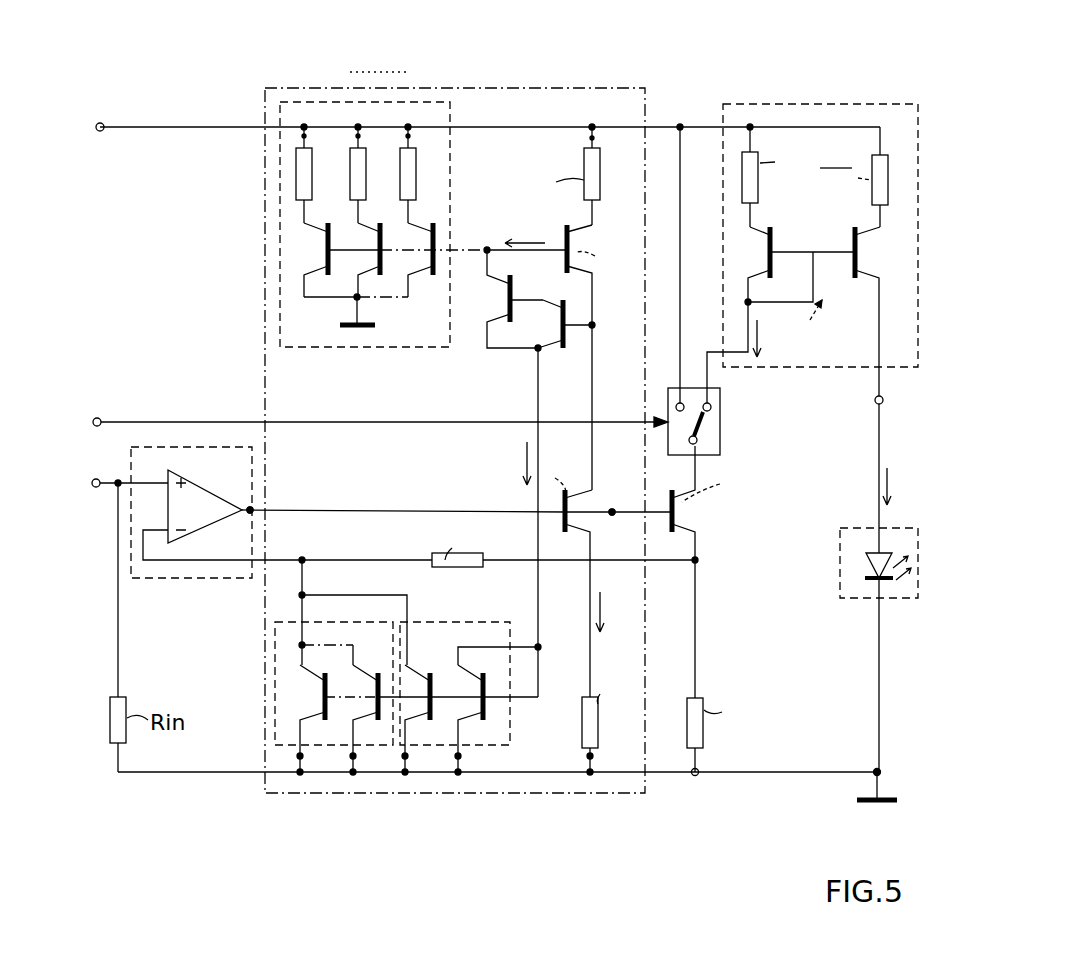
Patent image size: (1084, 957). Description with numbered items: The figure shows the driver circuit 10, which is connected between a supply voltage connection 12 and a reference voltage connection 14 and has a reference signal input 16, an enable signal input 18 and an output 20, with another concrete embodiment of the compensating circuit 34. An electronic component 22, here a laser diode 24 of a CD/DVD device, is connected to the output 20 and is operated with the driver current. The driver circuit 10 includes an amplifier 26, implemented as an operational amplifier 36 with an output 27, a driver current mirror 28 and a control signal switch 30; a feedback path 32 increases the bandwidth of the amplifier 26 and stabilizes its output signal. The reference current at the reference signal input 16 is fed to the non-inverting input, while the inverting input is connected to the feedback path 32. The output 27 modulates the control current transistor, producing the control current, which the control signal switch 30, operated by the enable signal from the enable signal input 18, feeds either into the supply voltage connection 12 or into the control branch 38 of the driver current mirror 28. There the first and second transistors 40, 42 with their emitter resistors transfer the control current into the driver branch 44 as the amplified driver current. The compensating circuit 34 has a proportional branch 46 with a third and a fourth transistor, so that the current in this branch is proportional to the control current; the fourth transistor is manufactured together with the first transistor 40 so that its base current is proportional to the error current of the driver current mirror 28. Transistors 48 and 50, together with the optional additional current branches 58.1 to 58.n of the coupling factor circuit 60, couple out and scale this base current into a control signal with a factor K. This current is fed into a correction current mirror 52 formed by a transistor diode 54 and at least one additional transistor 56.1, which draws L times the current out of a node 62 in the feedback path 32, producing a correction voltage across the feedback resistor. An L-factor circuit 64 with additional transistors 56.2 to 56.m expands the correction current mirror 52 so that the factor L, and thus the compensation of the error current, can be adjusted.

The driver circuit 10 is at (198, 90).
The supply voltage connection 12 is at (100, 122).
The reference voltage connection 14 is at (882, 795).
The reference signal input 16 is at (88, 495).
The enable signal input 18 is at (95, 418).
The output 20 is at (884, 403).
The electronic component 22 is at (838, 545).
The laser diode 24 is at (868, 566).
The amplifier 26 is at (165, 578).
The output 27 is at (252, 508).
The driver current mirror 28 is at (800, 104).
The control signal switch 30 is at (722, 420).
The feedback path 32 is at (240, 598).
The compensating circuit 34 is at (262, 228).
The operational amplifier 36 is at (185, 482).
The control branch 38 is at (768, 226).
The first transistor 40 is at (762, 264).
The second transistor 42 is at (866, 258).
The driver branch 44 is at (856, 300).
The proportional branch 46 is at (622, 776).
The transistor 48 is at (568, 345).
The transistor 50 is at (503, 303).
The correction current mirror 52 is at (488, 752).
The transistor diode 54 is at (490, 712).
The additional transistor 56.1 is at (432, 660).
The additional transistor 56.2 is at (363, 655).
The additional transistor 56.m is at (318, 690).
The additional current branch 58.1 is at (310, 138).
The additional current branch 58.n is at (395, 140).
The coupling factor circuit 60 is at (357, 347).
The node 62 is at (318, 545).
The L-factor circuit 64 is at (285, 742).